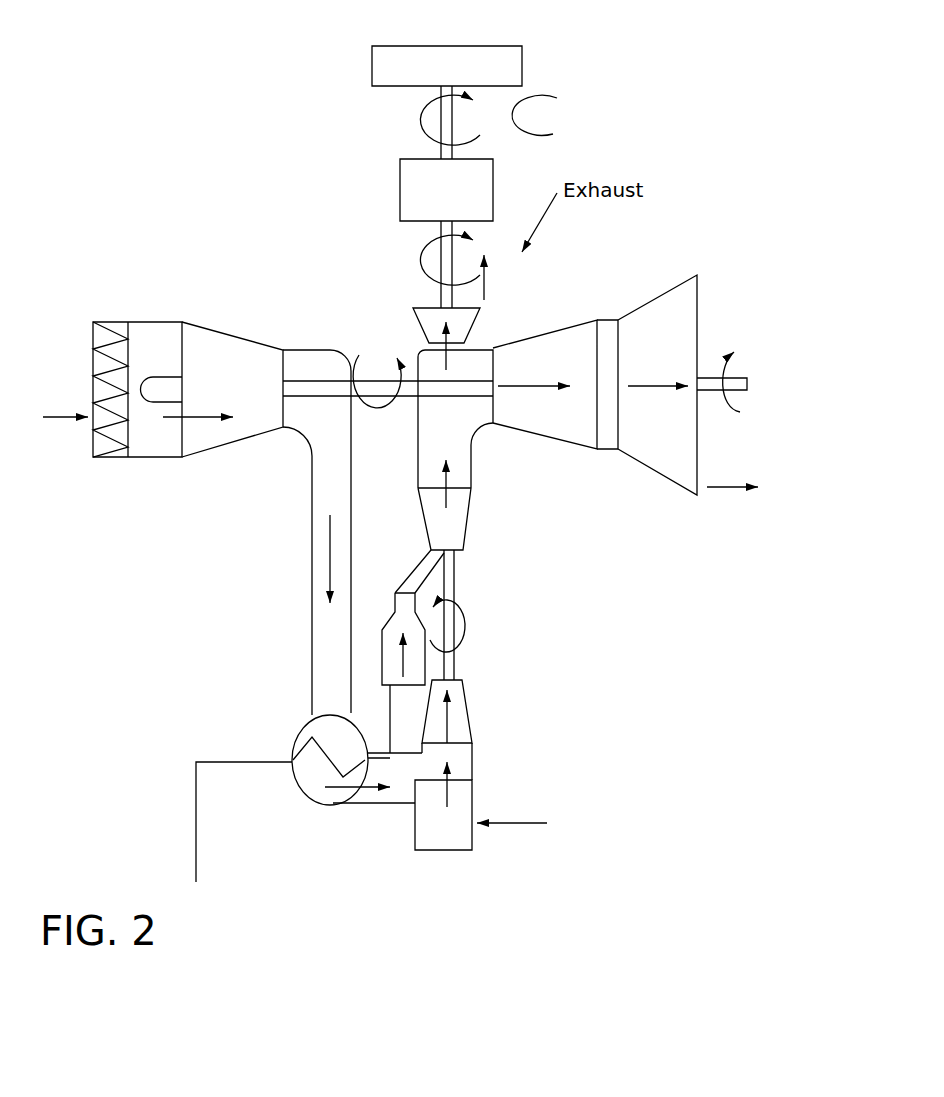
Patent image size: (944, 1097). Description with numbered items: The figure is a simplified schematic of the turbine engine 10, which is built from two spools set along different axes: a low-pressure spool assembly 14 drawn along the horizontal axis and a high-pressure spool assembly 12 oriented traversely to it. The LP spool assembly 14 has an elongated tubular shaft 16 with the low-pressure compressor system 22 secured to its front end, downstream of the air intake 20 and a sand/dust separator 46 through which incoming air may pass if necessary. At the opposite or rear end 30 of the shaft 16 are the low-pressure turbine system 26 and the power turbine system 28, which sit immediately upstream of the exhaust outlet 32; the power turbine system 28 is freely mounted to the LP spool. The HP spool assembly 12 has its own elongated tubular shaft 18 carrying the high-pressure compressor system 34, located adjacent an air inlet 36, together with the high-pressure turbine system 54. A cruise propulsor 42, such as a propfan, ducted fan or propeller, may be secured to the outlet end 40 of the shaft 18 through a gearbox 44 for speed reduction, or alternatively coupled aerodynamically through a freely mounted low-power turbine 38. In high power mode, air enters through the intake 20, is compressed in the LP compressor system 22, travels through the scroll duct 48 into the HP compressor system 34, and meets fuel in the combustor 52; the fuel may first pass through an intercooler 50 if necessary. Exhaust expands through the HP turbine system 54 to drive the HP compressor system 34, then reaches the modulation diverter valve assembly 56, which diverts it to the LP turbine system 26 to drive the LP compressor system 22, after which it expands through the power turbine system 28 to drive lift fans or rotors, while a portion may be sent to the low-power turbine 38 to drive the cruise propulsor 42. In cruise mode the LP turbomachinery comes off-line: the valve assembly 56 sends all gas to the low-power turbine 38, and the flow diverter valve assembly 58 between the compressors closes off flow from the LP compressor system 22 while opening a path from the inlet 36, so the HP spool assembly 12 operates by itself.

The turbine engine 10 is at (227, 155).
The high-pressure spool assembly 12 is at (498, 460).
The low-pressure spool assembly 14 is at (263, 460).
The elongated tubular shaft 16 is at (380, 387).
The elongated tubular shaft 18 is at (454, 582).
The air intake 20 is at (93, 457).
The low-pressure compressor system 22 is at (215, 328).
The low-pressure turbine system 26 is at (567, 327).
The power turbine system 28 is at (697, 312).
The rear end 30 is at (743, 392).
The exhaust outlet 32 is at (723, 333).
The high-pressure compressor system 34 is at (473, 720).
The air inlet 36 is at (475, 828).
The low-power turbine 38 is at (413, 312).
The outlet end 40 is at (370, 200).
The cruise propulsor 42 is at (522, 68).
The gearbox 44 is at (493, 177).
The sand/dust separator 46 is at (92, 318).
The scroll duct 48 is at (310, 585).
The intercooler 50 is at (293, 737).
The combustor 52 is at (408, 560).
The high-pressure turbine system 54 is at (470, 505).
The modulation diverter valve assembly 56 is at (418, 357).
The flow diverter valve assembly 58 is at (473, 772).